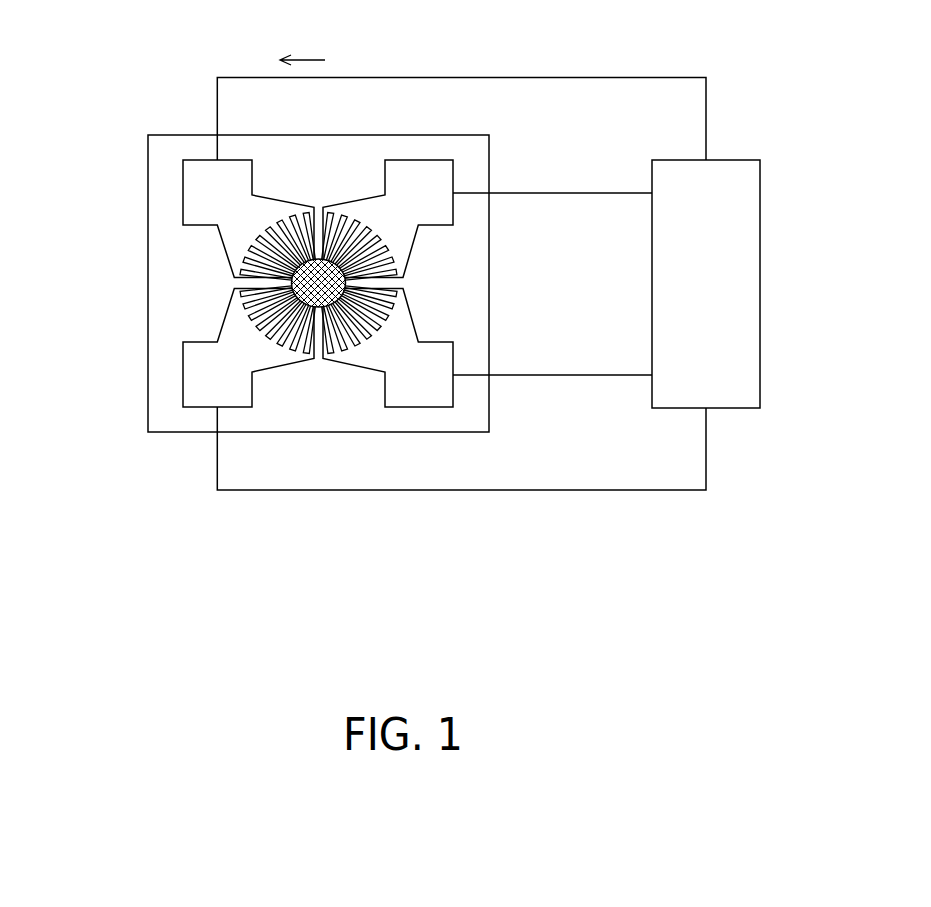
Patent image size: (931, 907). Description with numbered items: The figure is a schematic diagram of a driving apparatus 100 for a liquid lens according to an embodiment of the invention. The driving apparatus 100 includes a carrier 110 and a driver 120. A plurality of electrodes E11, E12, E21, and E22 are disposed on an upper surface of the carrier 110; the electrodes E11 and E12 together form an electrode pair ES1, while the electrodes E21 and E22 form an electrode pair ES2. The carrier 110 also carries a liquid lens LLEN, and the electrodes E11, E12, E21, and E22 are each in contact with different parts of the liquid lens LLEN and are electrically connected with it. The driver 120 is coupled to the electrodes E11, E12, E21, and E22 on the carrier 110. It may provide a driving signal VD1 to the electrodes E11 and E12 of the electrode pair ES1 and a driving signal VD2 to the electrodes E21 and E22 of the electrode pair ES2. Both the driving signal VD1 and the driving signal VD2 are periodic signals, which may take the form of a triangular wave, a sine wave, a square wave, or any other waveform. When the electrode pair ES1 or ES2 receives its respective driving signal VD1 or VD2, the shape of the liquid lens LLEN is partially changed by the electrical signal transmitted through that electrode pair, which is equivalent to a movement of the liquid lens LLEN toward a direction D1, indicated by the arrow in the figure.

The driving apparatus 100 is at (408, 294).
The carrier 110 is at (183, 134).
The driver 120 is at (733, 158).
The electrode E11 is at (183, 190).
The electrode E12 is at (201, 346).
The electrode E21 is at (453, 215).
The electrode E22 is at (453, 352).
The electrode pair ES1 is at (173, 283).
The electrode pair ES2 is at (472, 283).
The driving signal VD1 is at (461, 266).
The driving signal VD2 is at (552, 268).
The direction D1 is at (302, 45).
The liquid lens LLEN is at (313, 306).